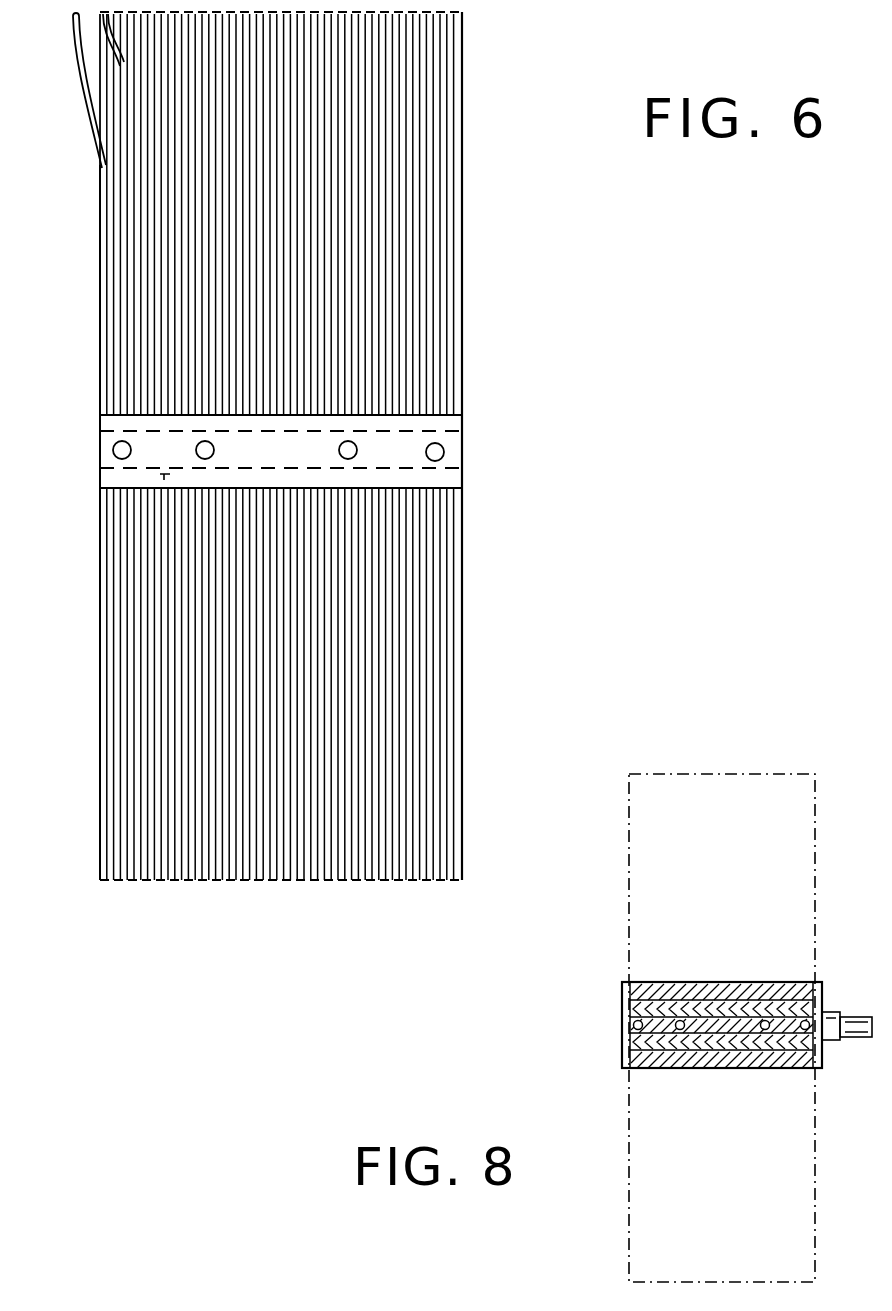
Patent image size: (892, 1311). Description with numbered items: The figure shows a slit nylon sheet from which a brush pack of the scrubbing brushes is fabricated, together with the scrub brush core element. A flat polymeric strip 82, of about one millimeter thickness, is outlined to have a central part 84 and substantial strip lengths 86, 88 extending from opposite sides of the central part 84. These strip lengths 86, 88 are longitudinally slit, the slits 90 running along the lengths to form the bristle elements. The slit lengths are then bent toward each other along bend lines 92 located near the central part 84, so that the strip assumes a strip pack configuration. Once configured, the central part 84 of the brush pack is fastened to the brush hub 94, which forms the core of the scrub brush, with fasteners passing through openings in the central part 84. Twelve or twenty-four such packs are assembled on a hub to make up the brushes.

In FIG. 6, the fiber strip assembly 82 is at (476, 230).
In FIG. 6, the central mounting band 84 is at (444, 446).
In FIG. 6, the upper fiber portion 86 is at (462, 142).
In FIG. 6, the lower fiber portion 88 is at (462, 662).
In FIG. 6, the fibers 90 is at (138, 113).
In FIG. 6, the stitching lines 92 is at (405, 430).
In FIG. 8, the clamp bar 94 is at (643, 1060).